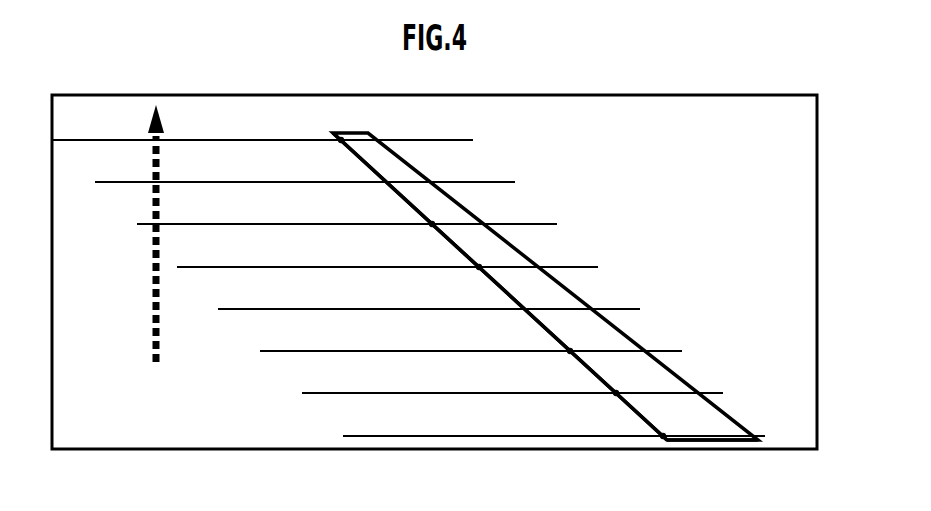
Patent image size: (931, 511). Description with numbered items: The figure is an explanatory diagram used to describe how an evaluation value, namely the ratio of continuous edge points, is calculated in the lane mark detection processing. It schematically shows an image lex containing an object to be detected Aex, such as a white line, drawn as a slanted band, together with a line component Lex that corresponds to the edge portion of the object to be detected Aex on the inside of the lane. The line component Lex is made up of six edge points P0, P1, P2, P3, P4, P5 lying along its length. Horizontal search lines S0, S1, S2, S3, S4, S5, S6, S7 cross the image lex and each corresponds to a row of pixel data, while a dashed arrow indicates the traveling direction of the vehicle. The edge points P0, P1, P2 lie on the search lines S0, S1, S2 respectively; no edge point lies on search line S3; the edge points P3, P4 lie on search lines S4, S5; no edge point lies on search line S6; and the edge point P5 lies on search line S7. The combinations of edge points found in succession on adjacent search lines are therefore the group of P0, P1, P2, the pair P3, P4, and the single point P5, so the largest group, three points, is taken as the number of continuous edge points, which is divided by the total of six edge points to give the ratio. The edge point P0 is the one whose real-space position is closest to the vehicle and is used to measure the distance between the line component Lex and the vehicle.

The search line S0 is at (389, 436).
The search line S1 is at (369, 393).
The search line S2 is at (343, 351).
The search line S3 is at (311, 309).
The search line S4 is at (291, 267).
The search line S5 is at (265, 224).
The search line S6 is at (240, 182).
The search line S7 is at (232, 140).
The edge point P0 is at (664, 437).
The edge point P1 is at (614, 392).
The edge point P2 is at (568, 350).
The edge point P3 is at (477, 269).
The edge point P4 is at (431, 226).
The edge point P5 is at (340, 142).
The object to be detected Aex is at (543, 290).
The line component Lex is at (633, 415).
The image lex is at (710, 450).